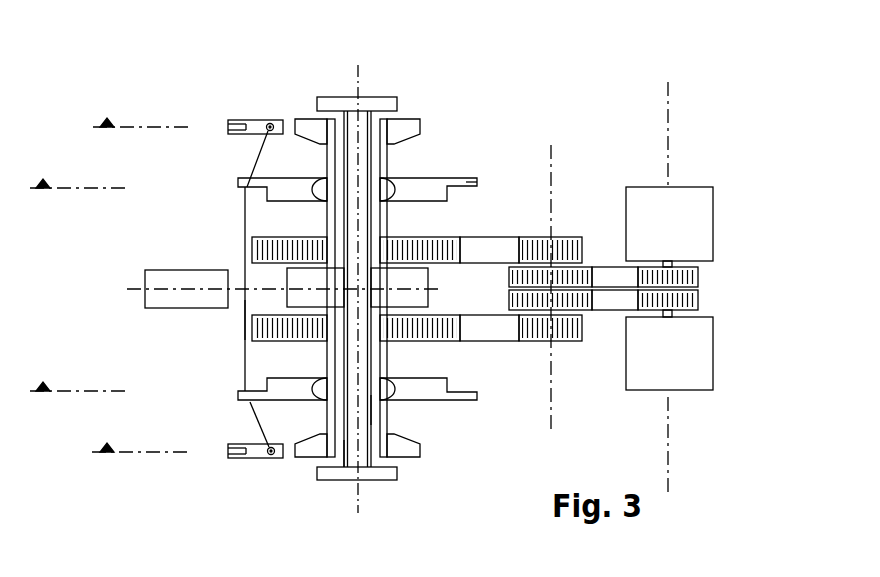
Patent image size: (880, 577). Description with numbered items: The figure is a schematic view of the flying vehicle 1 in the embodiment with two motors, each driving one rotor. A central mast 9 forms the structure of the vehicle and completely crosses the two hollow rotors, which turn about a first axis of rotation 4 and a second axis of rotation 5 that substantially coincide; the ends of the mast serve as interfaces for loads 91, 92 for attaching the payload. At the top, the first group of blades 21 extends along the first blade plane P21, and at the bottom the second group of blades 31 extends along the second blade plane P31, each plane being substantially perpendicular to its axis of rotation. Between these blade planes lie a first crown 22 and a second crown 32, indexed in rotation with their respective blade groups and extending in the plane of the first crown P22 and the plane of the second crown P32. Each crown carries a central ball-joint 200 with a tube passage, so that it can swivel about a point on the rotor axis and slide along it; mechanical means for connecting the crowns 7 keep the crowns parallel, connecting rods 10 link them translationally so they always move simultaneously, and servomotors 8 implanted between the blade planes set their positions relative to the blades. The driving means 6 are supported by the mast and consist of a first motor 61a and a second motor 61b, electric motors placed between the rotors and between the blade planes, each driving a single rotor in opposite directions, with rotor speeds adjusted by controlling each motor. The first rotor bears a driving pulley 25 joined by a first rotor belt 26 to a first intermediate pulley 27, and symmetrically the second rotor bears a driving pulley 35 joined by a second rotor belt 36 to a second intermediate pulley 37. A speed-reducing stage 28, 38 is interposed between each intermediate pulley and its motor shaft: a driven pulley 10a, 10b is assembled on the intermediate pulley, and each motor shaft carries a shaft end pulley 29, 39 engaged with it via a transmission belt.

The flying vehicle 1 is at (592, 88).
The first axis of rotation 4 is at (357, 80).
The second axis of rotation 5 is at (353, 452).
The driving means 6 is at (695, 287).
The mechanical means for connecting the crowns 7 is at (238, 381).
The servomotors 8 is at (200, 270).
The mast 9 is at (371, 410).
The connecting rods 10 is at (245, 331).
The first pinion 10a is at (566, 276).
The second pinion 10b is at (578, 301).
The first group of blades 21 is at (264, 120).
The first crown 22 is at (478, 183).
The driving pulley 25 is at (420, 237).
The first rotor belt 26 is at (489, 250).
The first intermediate pulley 27 is at (545, 236).
The speed-reducing stage 28 is at (607, 250).
The shaft end pulley 29 is at (685, 276).
The second group of blades 31 is at (258, 458).
The second crown 32 is at (460, 400).
The driving pulley 35 is at (420, 342).
The second rotor belt 36 is at (489, 328).
The second intermediate pulley 37 is at (542, 341).
The speed-reducing stage 38 is at (613, 320).
The shaft end pulley 39 is at (685, 302).
The first motor 61a is at (682, 225).
The second motor 61b is at (687, 371).
The interface for loads 91 is at (382, 97).
The interface for loads 92 is at (378, 480).
The central ball-joint 200 is at (312, 190).
The first blade plane P21 is at (107, 120).
The plane of the first crown P22 is at (43, 183).
The second blade plane P31 is at (107, 447).
The plane of the second crown P32 is at (43, 386).